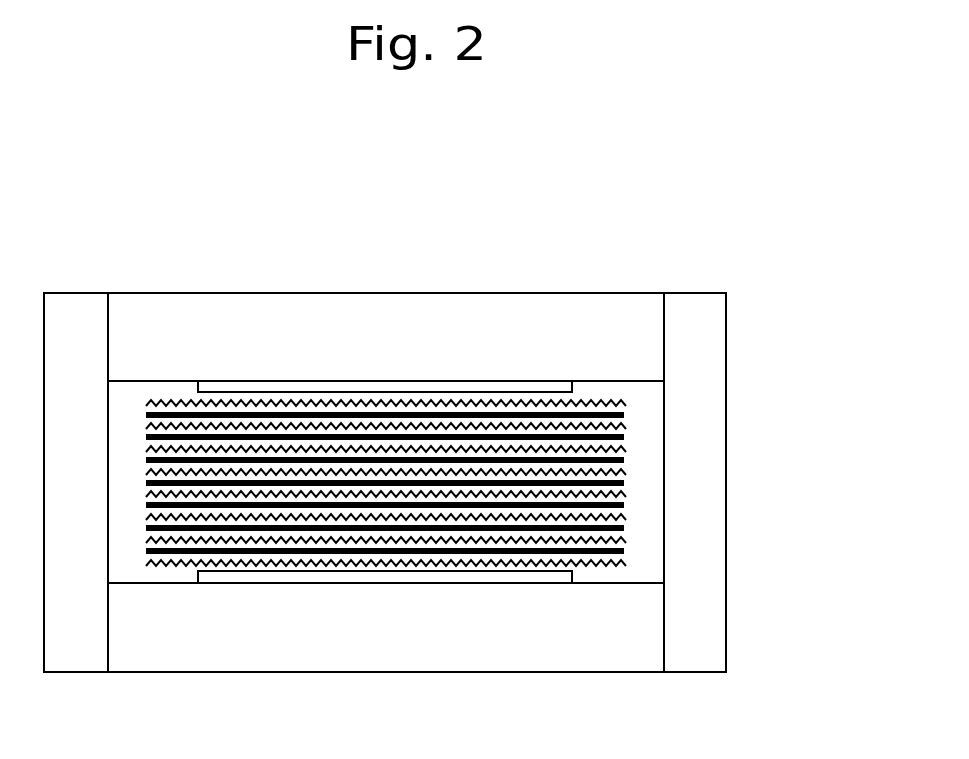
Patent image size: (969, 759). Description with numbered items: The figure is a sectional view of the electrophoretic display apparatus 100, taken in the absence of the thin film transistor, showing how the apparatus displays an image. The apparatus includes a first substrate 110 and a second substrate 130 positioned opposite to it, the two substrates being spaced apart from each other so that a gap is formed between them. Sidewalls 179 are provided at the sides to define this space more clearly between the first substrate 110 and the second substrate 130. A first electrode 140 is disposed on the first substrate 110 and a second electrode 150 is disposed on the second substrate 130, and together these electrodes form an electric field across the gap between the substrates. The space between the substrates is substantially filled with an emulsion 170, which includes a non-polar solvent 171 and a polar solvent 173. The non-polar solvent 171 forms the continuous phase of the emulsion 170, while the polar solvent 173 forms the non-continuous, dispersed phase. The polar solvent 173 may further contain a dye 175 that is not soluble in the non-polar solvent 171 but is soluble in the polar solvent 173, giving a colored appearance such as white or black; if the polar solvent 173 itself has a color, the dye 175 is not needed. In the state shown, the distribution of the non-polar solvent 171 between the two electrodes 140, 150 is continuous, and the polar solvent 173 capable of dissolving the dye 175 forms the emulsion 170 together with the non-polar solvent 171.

The electrophoretic display apparatus 100 is at (574, 264).
The first substrate 110 is at (650, 617).
The second substrate 130 is at (648, 340).
The first electrode 140 is at (413, 583).
The second electrode 150 is at (413, 381).
The emulsion 170 is at (503, 483).
The non-polar solvent 171 is at (624, 424).
The polar solvent 173 is at (624, 503).
The dye 175 is at (624, 503).
The sidewalls 179 is at (713, 384).